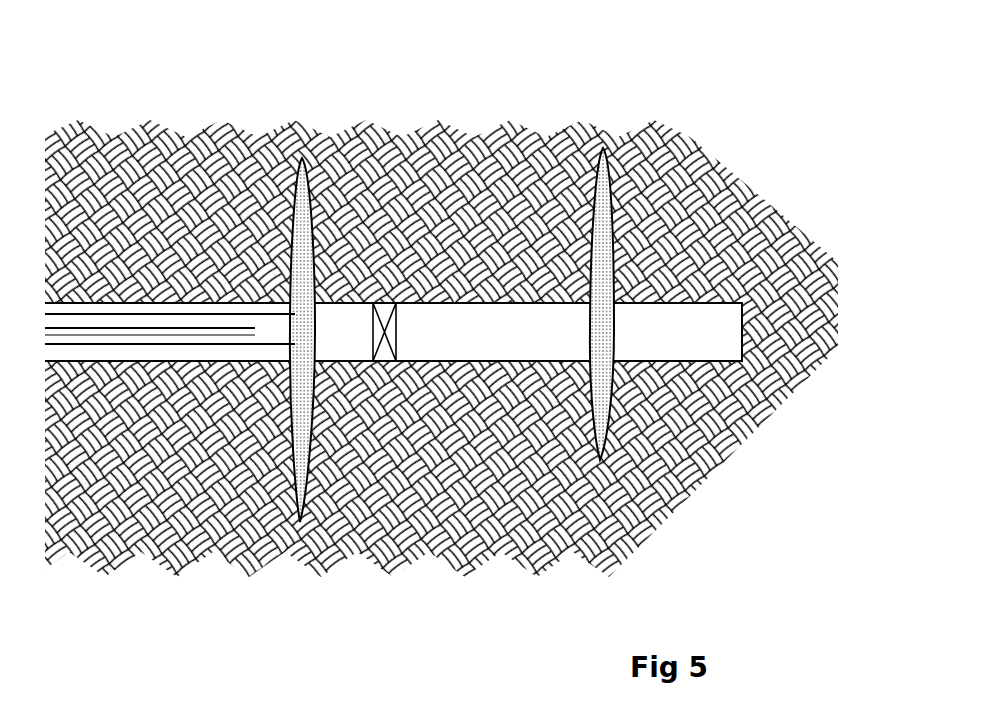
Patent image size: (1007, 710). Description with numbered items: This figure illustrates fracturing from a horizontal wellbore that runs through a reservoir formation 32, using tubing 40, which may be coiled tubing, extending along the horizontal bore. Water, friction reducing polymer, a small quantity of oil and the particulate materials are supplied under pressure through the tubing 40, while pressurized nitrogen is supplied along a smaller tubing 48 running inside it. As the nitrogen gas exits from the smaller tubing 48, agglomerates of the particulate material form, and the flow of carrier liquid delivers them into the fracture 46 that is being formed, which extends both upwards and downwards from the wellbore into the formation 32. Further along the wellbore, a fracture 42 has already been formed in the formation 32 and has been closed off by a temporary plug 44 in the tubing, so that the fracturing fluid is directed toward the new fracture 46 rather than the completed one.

The reservoir formation 32 is at (683, 218).
The tubing 40 is at (193, 314).
The fracture 42 is at (603, 270).
The temporary plug 44 is at (386, 318).
The fracture 46 is at (305, 240).
The smaller tubing 48 is at (103, 328).